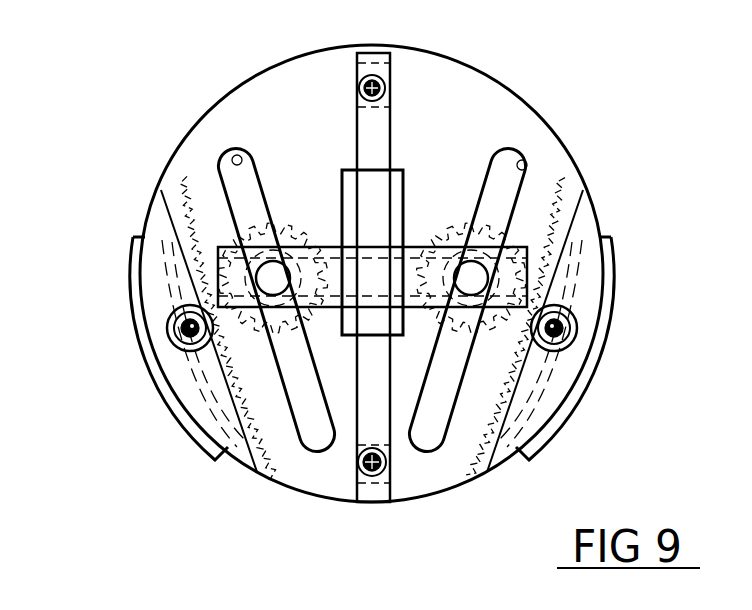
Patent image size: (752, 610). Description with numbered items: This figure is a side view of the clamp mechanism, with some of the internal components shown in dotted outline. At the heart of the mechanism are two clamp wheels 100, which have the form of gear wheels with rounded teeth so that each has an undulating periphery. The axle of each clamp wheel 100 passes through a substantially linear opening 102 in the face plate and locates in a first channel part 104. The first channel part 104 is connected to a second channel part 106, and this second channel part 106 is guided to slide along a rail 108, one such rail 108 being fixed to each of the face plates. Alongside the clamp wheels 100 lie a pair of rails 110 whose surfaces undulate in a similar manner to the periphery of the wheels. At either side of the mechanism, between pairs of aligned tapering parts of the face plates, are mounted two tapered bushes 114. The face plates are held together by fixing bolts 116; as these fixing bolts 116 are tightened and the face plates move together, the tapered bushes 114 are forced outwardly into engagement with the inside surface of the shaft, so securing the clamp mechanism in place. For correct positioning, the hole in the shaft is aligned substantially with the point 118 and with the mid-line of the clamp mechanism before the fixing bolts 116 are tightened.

The clamp wheel 100 is at (232, 213).
The linear opening 102 is at (237, 157).
The first channel part 104 is at (413, 243).
The second channel part 106 is at (343, 185).
The rail 108 is at (392, 50).
The rail 110 is at (252, 450).
The bush 114 is at (137, 275).
The fixing bolt 116 is at (170, 321).
The point 118 is at (372, 503).